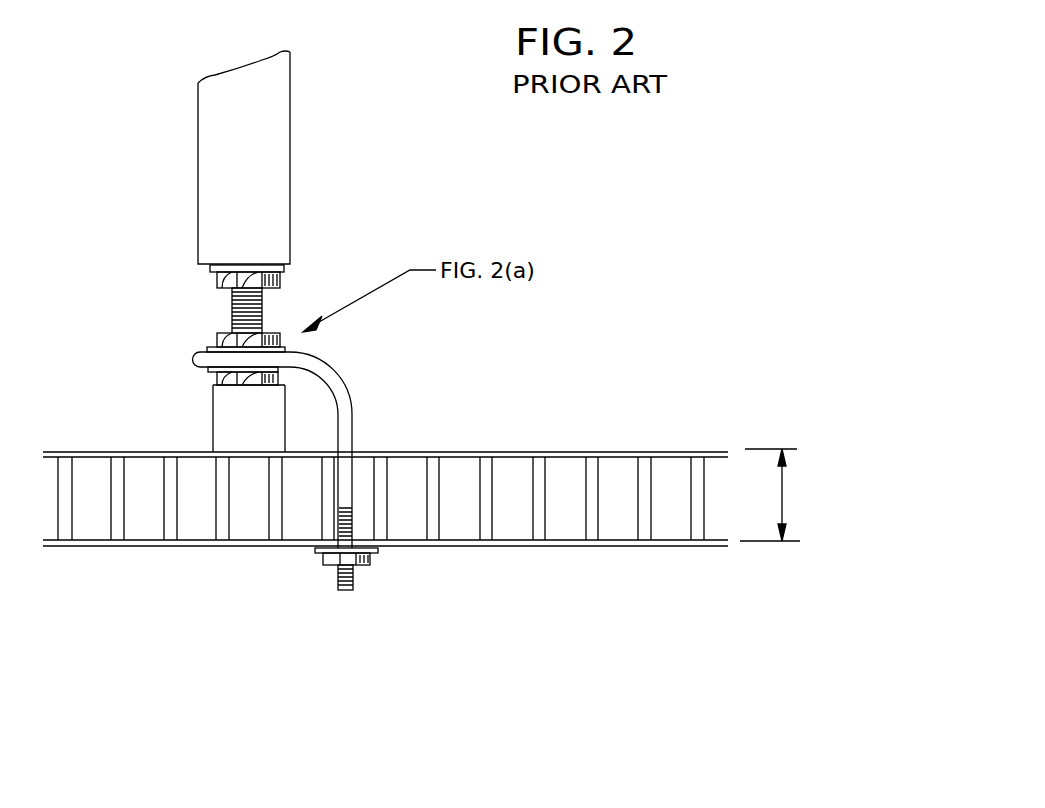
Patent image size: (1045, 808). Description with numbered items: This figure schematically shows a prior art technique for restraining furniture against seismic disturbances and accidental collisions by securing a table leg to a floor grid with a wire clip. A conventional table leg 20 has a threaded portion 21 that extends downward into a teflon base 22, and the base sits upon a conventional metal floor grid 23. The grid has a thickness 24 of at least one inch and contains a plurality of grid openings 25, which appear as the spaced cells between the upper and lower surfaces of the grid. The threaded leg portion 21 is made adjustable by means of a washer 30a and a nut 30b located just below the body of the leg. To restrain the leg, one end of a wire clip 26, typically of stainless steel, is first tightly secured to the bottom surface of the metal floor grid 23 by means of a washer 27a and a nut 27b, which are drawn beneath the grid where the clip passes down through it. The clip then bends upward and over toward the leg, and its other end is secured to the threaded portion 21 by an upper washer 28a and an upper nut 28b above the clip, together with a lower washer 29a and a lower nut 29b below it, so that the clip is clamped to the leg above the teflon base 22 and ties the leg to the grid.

The table leg 20 is at (288, 95).
The threaded portion 21 is at (232, 308).
The teflon base 22 is at (225, 421).
The metal floor grid 23 is at (688, 448).
The thickness 24 is at (786, 495).
The grid openings 25 is at (614, 470).
The wire clip 26 is at (352, 418).
The washer 27a is at (373, 553).
The nut 27b is at (360, 563).
The upper washer 28a is at (285, 347).
The upper nut 28b is at (278, 333).
The lower washer 29a is at (208, 368).
The lower nut 29b is at (217, 380).
The washer 30a is at (210, 268).
The nut 30b is at (222, 282).